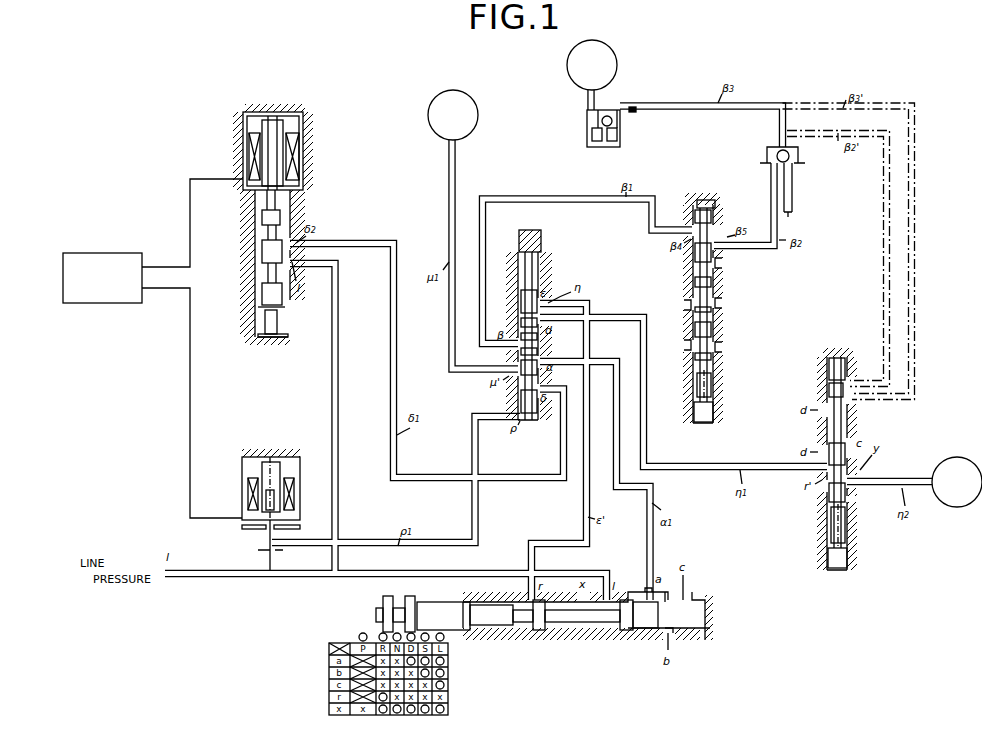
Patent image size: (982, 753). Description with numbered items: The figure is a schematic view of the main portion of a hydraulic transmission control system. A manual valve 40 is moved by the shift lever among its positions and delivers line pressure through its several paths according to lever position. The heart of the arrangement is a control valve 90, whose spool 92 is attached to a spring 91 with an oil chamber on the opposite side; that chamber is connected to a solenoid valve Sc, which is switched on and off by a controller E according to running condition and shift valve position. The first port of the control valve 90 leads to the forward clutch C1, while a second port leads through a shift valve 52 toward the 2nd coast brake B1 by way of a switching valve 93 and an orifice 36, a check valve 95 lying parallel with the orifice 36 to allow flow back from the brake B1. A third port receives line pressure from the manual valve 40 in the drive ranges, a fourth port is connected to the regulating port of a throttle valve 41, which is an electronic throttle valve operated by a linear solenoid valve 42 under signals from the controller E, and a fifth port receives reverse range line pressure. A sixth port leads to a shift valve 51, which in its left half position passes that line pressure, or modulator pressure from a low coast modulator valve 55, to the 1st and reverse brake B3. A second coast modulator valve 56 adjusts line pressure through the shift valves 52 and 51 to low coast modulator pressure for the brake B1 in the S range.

The controller E is at (108, 258).
The solenoid valve Sc is at (242, 462).
The forward clutch C1 is at (453, 115).
The 2nd coast brake B1 is at (592, 65).
The 1st and reverse brake B3 is at (957, 482).
The orifice 36 is at (636, 106).
The manual valve 40 is at (704, 596).
The throttle valve 41 is at (247, 228).
The linear solenoid valve 42 is at (303, 160).
The shift valve 51 is at (843, 459).
The shift valve 52 is at (728, 302).
The low coast modulator valve 55 is at (856, 497).
The second coast modulator valve 56 is at (795, 198).
The control valve 90 is at (548, 262).
The spring 91 is at (543, 247).
The spool 92 is at (545, 291).
The switching valve 93 is at (768, 153).
The check valve 95 is at (590, 122).